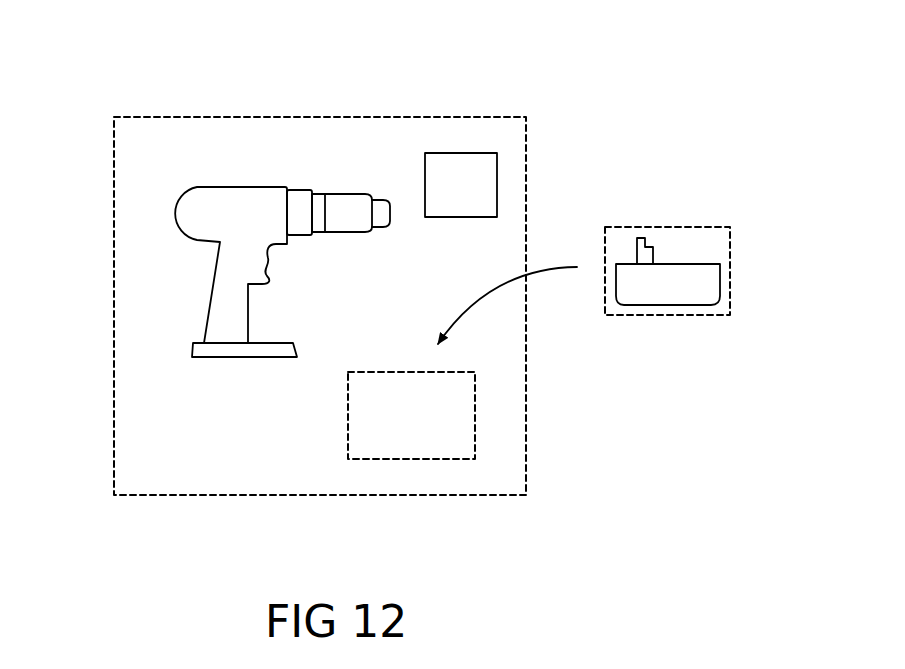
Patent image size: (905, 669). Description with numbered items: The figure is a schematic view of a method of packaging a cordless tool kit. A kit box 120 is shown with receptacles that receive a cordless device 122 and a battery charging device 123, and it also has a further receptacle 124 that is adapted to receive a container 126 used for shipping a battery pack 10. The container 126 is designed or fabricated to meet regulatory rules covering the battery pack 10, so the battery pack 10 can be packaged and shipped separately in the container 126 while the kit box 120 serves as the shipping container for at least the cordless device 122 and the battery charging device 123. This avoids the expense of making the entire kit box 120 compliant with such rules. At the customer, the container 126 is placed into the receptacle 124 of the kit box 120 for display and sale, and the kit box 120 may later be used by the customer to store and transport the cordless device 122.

The battery pack 10 is at (672, 289).
The kit box 120 is at (365, 108).
The cordless device 122 is at (215, 296).
The battery charging device 123 is at (480, 182).
The receptacle 124 is at (415, 448).
The container 126 is at (745, 242).